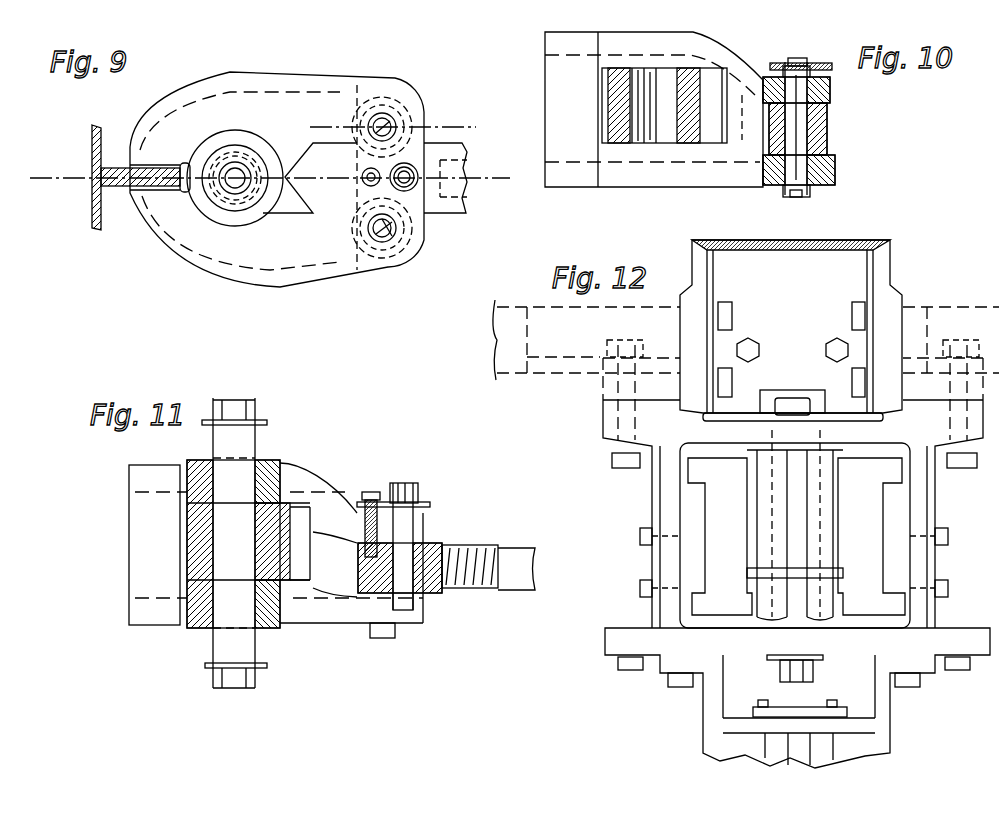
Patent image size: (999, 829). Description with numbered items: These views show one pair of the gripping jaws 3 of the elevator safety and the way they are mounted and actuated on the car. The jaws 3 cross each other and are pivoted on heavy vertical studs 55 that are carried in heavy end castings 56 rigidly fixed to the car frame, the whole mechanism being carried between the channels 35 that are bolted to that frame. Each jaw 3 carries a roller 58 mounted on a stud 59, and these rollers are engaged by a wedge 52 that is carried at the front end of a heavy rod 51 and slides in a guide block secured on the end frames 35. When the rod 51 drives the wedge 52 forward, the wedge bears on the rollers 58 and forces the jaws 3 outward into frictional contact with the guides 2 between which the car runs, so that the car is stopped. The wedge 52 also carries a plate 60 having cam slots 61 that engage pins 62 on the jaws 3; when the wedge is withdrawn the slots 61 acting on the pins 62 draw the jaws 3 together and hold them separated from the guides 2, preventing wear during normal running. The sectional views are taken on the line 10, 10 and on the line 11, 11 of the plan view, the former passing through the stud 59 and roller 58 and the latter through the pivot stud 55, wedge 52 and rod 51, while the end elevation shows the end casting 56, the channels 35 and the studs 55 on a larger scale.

In FIG. 9, the guide 2 is at (92, 196).
In FIG. 9, the gripping jaw 3 is at (277, 179).
In FIG. 10, the gripping jaw 3 is at (654, 109).
In FIG. 11, the gripping jaw 3 is at (276, 544).
In FIG. 12, the gripping jaw 3 is at (796, 536).
In FIG. 9, the sheave 10 is at (393, 128).
In FIG. 9, the section line 11 is at (270, 176).
In FIG. 12, the channel 35 is at (652, 560).
In FIG. 11, the rod 51 is at (517, 558).
In FIG. 9, the wedge 52 is at (443, 203).
In FIG. 11, the wedge 52 is at (413, 548).
In FIG. 9, the vertical stud 55 is at (236, 170).
In FIG. 11, the vertical stud 55 is at (248, 543).
In FIG. 12, the vertical stud 55 is at (773, 638).
In FIG. 12, the end casting 56 is at (793, 505).
In FIG. 9, the roller 58 is at (403, 120).
In FIG. 10, the roller 58 is at (827, 127).
In FIG. 9, the stud 59 is at (386, 114).
In FIG. 10, the stud 59 is at (797, 145).
In FIG. 9, the plate 60 is at (364, 184).
In FIG. 10, the plate 60 is at (834, 57).
In FIG. 11, the plate 60 is at (425, 505).
In FIG. 9, the cam slot 61 is at (392, 236).
In FIG. 10, the cam slot 61 is at (808, 64).
In FIG. 9, the pin 62 is at (380, 238).
In FIG. 10, the pin 62 is at (792, 62).